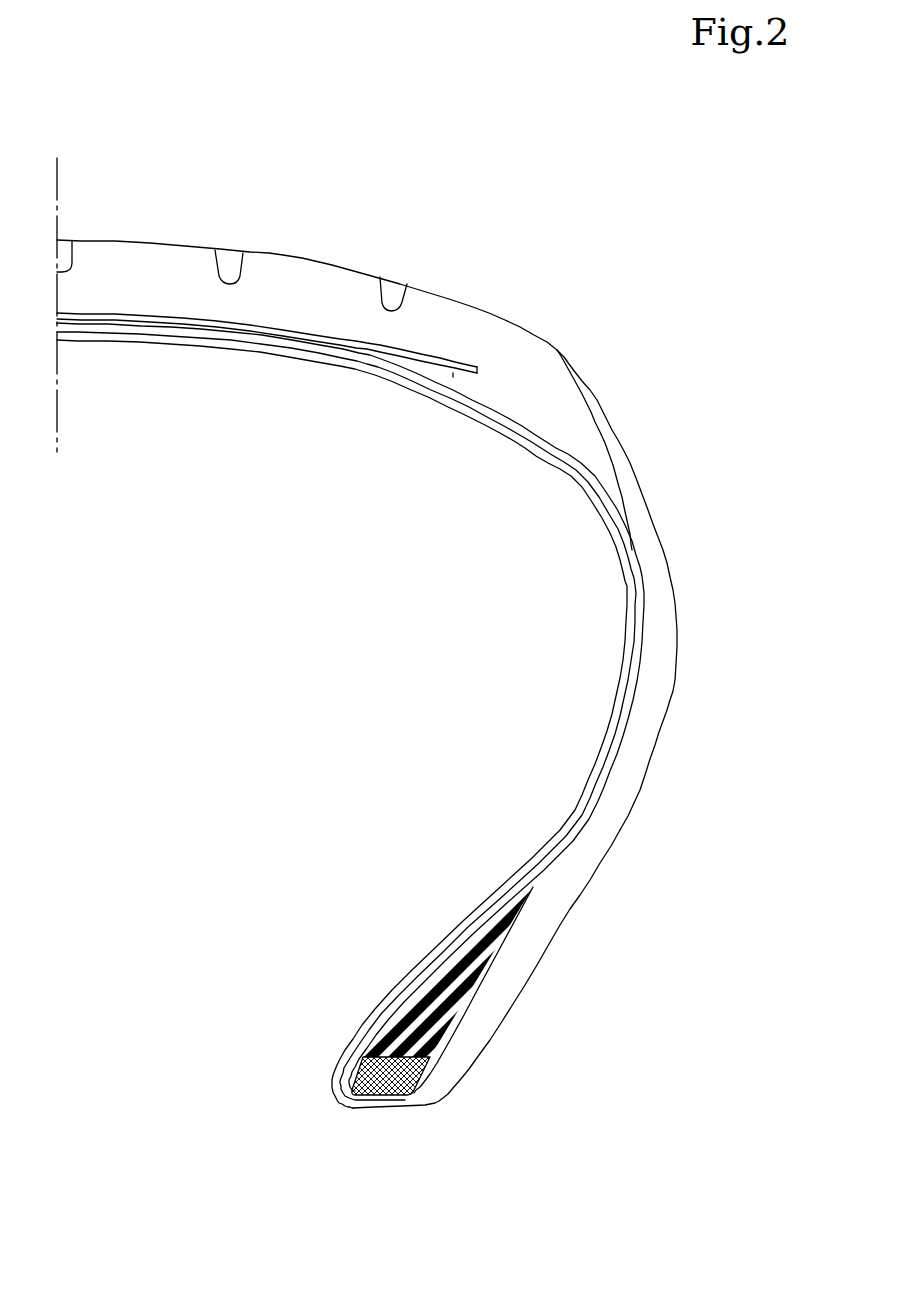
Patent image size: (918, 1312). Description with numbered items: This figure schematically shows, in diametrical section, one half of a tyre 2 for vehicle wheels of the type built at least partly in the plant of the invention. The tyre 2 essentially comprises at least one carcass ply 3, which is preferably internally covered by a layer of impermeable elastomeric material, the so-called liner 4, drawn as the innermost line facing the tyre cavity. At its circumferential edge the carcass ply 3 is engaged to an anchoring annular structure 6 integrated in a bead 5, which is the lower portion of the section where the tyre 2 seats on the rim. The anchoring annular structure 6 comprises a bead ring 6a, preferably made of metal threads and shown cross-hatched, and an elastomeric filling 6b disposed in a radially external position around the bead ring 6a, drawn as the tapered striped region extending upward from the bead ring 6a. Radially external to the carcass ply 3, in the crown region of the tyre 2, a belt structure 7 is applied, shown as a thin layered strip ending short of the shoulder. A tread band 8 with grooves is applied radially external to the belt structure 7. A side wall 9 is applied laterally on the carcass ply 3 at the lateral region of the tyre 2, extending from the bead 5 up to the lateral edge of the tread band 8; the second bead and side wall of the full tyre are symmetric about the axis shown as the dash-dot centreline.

The tyre 2 is at (225, 747).
The carcass ply 3 is at (542, 412).
The liner 4 is at (460, 404).
The bead 5 is at (495, 1066).
The anchoring annular structure 6 is at (368, 1038).
The bead ring 6a is at (386, 1082).
The elastomeric filling 6b is at (443, 985).
The belt structure 7 is at (439, 348).
The tread band 8 is at (304, 256).
The side wall 9 is at (675, 678).